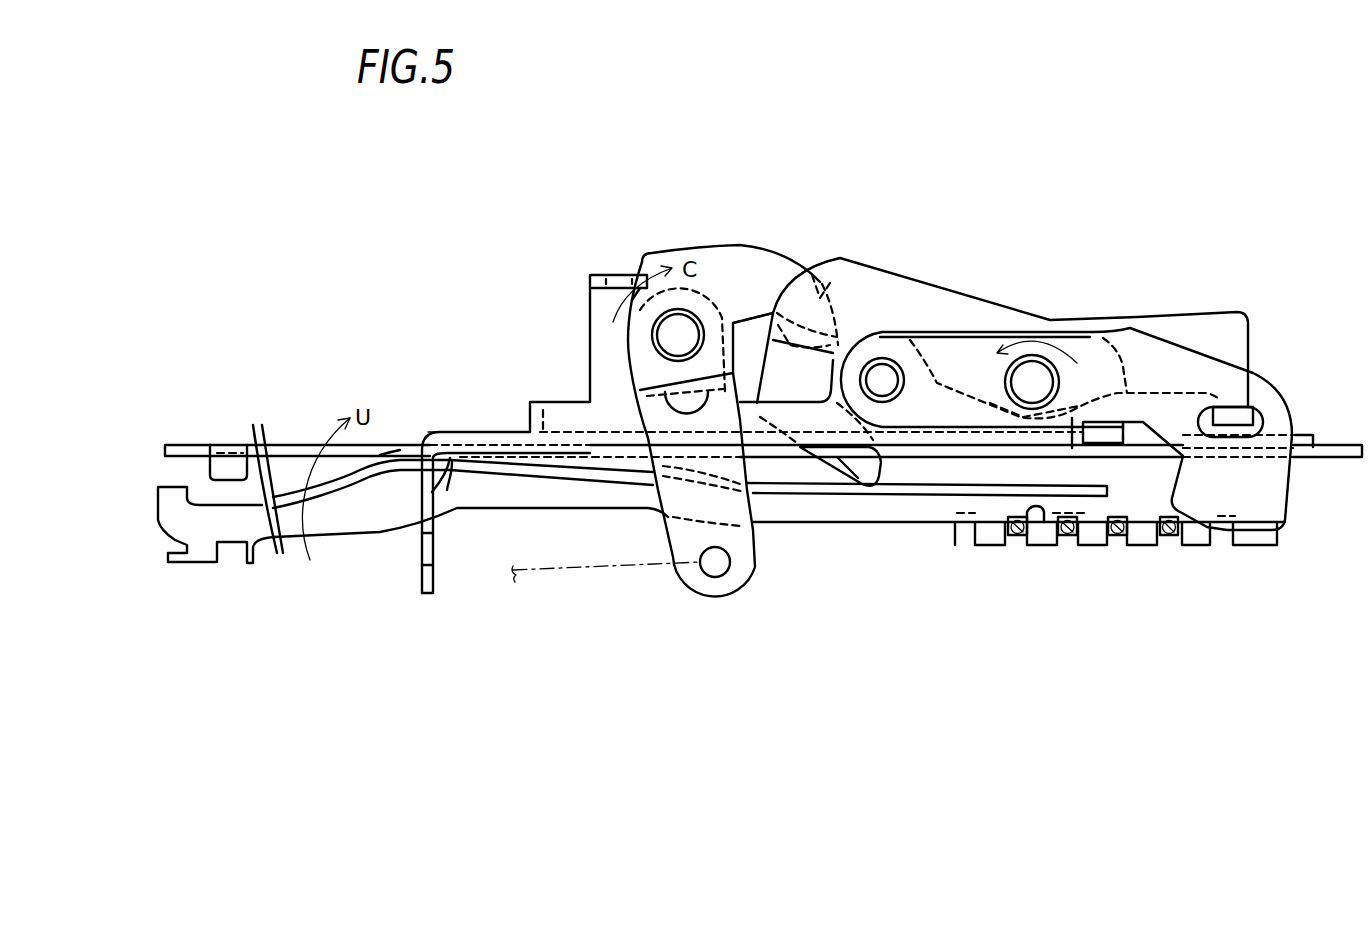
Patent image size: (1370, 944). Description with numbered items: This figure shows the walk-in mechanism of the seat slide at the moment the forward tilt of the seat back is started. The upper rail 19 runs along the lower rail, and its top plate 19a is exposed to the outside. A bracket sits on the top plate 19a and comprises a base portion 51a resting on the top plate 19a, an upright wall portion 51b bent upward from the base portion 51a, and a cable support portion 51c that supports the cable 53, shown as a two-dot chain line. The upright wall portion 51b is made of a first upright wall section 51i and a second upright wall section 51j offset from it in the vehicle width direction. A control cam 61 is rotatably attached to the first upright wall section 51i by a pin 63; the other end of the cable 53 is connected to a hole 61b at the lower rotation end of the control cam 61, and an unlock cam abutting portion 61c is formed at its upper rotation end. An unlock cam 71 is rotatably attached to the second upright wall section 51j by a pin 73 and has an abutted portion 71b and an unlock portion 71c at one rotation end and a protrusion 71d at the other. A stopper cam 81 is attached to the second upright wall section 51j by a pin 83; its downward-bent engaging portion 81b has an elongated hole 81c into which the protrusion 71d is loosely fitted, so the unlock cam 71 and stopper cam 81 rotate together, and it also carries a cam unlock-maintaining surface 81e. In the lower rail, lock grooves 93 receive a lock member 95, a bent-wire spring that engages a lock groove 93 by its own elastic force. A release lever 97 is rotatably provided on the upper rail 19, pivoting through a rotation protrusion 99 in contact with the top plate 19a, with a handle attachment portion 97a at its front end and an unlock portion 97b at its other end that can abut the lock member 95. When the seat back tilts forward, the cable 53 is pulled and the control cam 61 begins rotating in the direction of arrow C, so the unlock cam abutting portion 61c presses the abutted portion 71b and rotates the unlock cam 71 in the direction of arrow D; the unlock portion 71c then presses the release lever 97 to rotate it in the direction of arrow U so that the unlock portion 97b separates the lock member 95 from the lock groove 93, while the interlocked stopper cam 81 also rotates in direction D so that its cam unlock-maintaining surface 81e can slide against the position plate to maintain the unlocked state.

The upper rail 19 is at (763, 416).
The top plate 19a is at (292, 452).
The rotation protrusion 99 is at (397, 458).
The base portion 51a is at (463, 432).
The upright wall portion 51b is at (830, 450).
The cable support portion 51c is at (437, 580).
The first upright wall section 51i is at (607, 337).
The second upright wall section 51j is at (1120, 423).
The cable 53 is at (600, 568).
The control cam 61 is at (763, 417).
The hole 61b is at (720, 568).
The unlock cam abutting portion 61c is at (837, 340).
The pin 63 is at (700, 300).
The unlock cam 71 is at (1030, 401).
The abutted portion 71b is at (862, 262).
The unlock portion 71c is at (860, 470).
The protrusion 71d is at (1250, 413).
The pin 73 is at (1046, 373).
The stopper cam 81 is at (1099, 433).
The engaging portion 81b is at (1270, 502).
The elongated hole 81c is at (1273, 425).
The cam unlock-maintaining surface 81e is at (1268, 530).
The pin 83 is at (896, 393).
The lock grooves 93 is at (1213, 535).
The lock member 95 is at (1122, 537).
The release lever 97 is at (543, 493).
The handle attachment portion 97a is at (233, 543).
The unlock portion 97b is at (1082, 502).